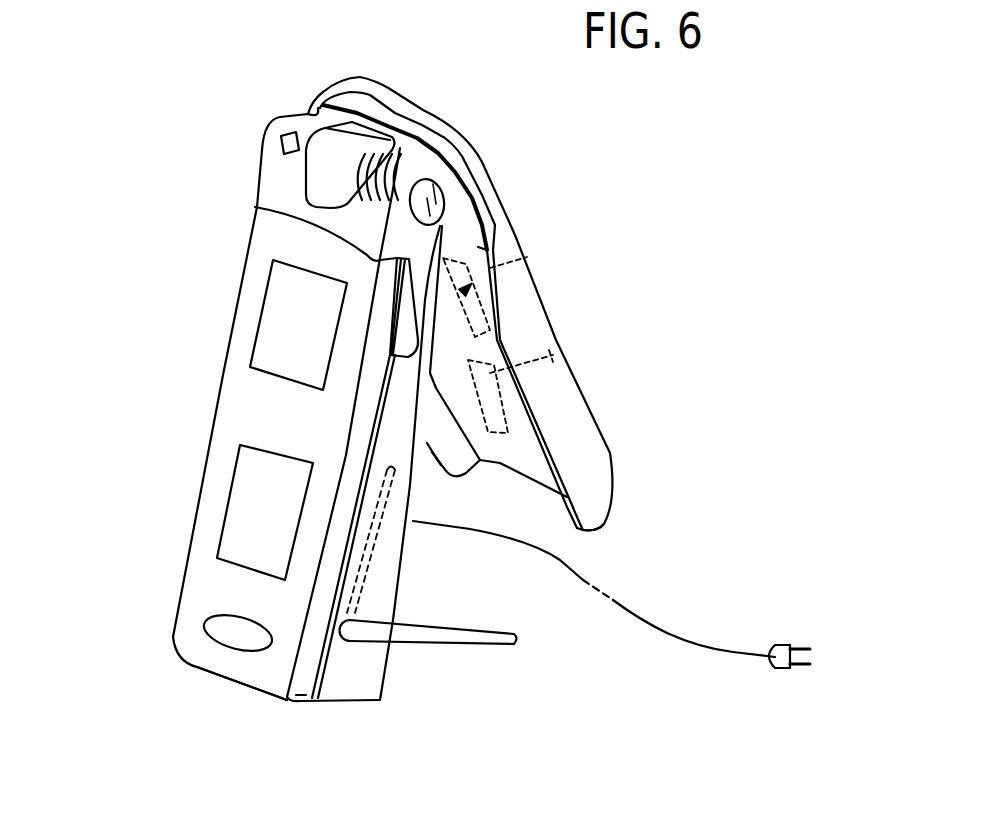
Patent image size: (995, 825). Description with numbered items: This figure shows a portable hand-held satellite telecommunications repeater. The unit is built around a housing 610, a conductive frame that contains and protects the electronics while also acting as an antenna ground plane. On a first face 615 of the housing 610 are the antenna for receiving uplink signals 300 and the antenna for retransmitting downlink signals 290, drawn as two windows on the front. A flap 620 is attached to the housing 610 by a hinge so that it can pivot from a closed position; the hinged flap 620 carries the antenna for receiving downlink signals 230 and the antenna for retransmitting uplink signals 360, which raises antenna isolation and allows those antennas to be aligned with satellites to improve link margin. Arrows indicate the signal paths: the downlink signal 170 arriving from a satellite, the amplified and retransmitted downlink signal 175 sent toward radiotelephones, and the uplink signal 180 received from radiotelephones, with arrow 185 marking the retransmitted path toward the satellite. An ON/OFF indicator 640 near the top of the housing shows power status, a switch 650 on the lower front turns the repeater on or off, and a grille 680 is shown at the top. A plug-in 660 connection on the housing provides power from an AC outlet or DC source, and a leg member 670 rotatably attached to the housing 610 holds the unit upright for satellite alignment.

The housing 610 is at (200, 201).
The downlink signal 170 is at (537, 249).
The hinge arm 185 is at (567, 360).
The uplink signal 180 is at (298, 333).
The amplified and retransmitted downlink signal 175 is at (257, 508).
The antenna for receiving uplink signals 300 is at (277, 283).
The antenna for retransmitting downlink signals 290 is at (240, 460).
The ON/OFF indicator 640 is at (283, 140).
The speaker grille 680 is at (408, 164).
The antenna for receiving downlink signals 230 is at (480, 320).
The antenna for retransmitting uplink signals 360 is at (507, 417).
The flap 620 is at (628, 519).
The first face 615 is at (207, 593).
The switch 650 is at (232, 640).
The leg member 670 is at (452, 637).
The plug-in 660 is at (790, 637).